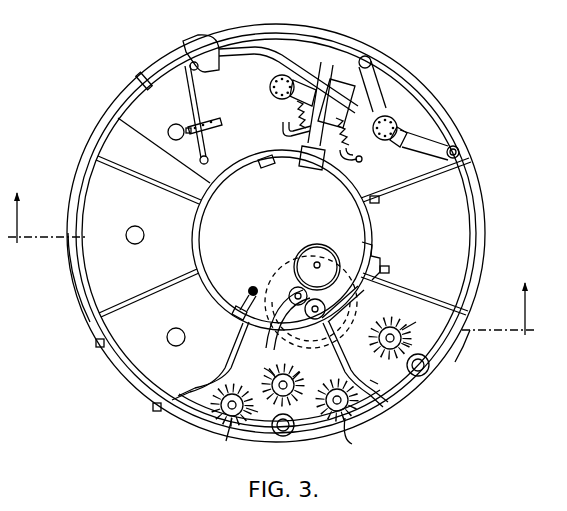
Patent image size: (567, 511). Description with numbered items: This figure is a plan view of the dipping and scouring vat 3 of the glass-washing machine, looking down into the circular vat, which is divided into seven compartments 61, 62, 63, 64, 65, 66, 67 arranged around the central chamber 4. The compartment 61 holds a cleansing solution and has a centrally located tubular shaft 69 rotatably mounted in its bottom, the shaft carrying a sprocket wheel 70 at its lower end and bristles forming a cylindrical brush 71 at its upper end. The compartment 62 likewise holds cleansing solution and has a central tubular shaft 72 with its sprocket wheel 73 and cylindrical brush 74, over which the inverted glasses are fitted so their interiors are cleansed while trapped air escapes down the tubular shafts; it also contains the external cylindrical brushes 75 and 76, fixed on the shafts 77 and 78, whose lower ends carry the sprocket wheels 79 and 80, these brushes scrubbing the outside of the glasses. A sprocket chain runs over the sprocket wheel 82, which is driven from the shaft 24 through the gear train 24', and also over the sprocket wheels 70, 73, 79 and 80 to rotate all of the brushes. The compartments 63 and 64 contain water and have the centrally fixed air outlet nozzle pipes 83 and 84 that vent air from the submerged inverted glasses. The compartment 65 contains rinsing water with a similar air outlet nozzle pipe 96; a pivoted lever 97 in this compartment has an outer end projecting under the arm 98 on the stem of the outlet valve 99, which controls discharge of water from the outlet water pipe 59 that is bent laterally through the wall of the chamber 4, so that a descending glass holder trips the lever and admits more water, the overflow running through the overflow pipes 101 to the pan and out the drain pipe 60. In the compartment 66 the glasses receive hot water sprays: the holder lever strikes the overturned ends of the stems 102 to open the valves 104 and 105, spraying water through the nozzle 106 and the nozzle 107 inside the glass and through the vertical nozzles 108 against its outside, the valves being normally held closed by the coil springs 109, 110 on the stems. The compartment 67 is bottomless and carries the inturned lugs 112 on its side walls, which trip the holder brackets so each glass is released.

The vat 3 is at (430, 366).
The chamber 4 is at (272, 263).
The shaft 24 is at (315, 283).
The gear train 24' is at (280, 324).
The outlet water pipe 59 is at (99, 130).
The drain pipe 60 is at (266, 168).
The compartment 61 is at (455, 342).
The compartment 62 is at (386, 410).
The compartment 63 is at (132, 368).
The compartment 64 is at (92, 287).
The compartment 65 is at (146, 80).
The compartment 66 is at (289, 40).
The compartment 67 is at (468, 186).
The tubular shaft 69 is at (404, 333).
The sprocket wheel 70 is at (388, 328).
The cylindrical brush 71 is at (425, 340).
The tubular shaft 72 is at (297, 384).
The sprocket wheel 73 is at (264, 368).
The cylindrical brush 74 is at (300, 372).
The external cylindrical brush 75 is at (220, 407).
The external cylindrical brush 76 is at (384, 386).
The shaft 77 is at (261, 415).
The shaft 78 is at (326, 404).
The sprocket wheel 79 is at (222, 436).
The sprocket wheel 80 is at (357, 436).
The sprocket wheel 82 is at (340, 338).
The air outlet nozzle pipe 83 is at (185, 337).
The air outlet nozzle pipe 84 is at (143, 232).
The air outlet nozzle pipe 96 is at (171, 130).
The lever 97 is at (196, 102).
The arm 98 is at (186, 44).
The outlet valve 99 is at (214, 62).
The overflow pipe 101 is at (285, 437).
The stem 102 is at (283, 127).
The valve 104 is at (334, 72).
The valve 105 is at (396, 118).
The nozzle 106 is at (272, 93).
The nozzle 107 is at (407, 134).
The vertical nozzle 108 is at (378, 73).
The coil spring 109 is at (311, 114).
The coil spring 110 is at (348, 139).
The inturned lug 112 is at (380, 204).